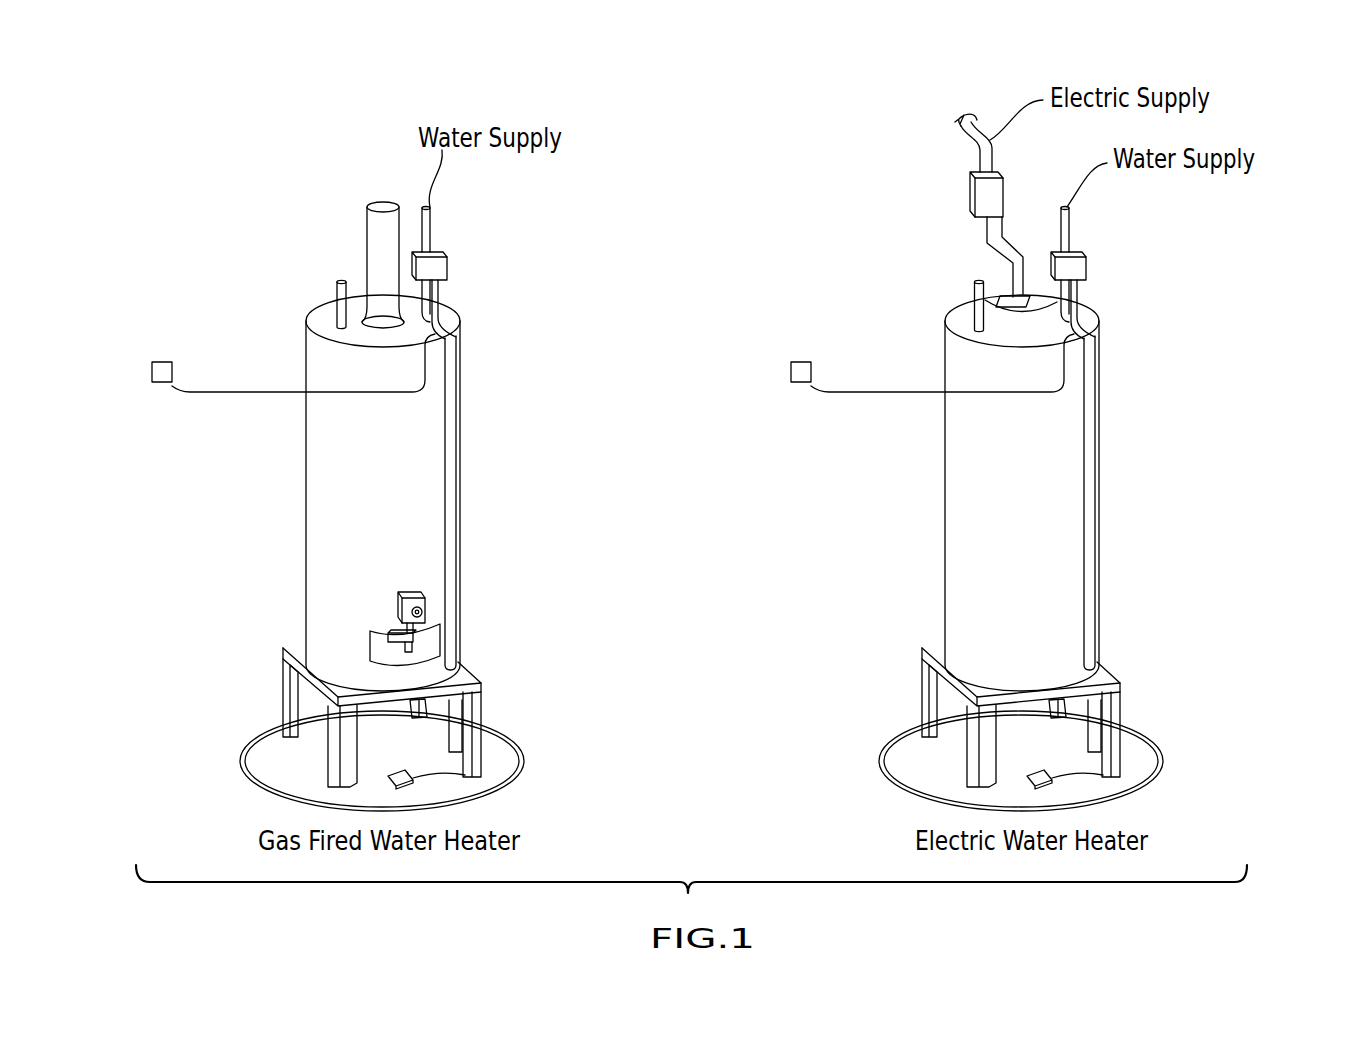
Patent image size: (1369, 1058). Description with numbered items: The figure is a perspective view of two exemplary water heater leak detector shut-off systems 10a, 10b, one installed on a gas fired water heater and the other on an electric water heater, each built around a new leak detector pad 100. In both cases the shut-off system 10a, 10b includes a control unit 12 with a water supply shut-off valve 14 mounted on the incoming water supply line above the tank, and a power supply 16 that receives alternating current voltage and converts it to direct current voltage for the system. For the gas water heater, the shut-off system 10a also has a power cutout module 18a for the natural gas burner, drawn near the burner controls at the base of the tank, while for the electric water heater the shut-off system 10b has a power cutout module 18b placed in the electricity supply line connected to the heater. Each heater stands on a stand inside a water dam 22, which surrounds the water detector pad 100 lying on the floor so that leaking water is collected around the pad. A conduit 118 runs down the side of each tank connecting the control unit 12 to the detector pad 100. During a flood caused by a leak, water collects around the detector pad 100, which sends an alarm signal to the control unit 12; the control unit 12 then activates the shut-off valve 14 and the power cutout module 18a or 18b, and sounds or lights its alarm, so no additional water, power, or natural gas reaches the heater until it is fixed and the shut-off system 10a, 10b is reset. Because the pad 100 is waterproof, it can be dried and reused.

The water heater leak detector shut-off system 10a is at (138, 485).
The water heater leak detector shut-off system 10b is at (1192, 432).
The control unit 12 is at (1144, 278).
The water supply shut-off valve 14 is at (575, 297).
The power supply 16 is at (802, 360).
The power cutout module 18a is at (397, 647).
The power cutout module 18b is at (970, 188).
The water dam 22 is at (243, 753).
The leak detector pad 100 is at (1027, 773).
The conduit 118 is at (447, 597).